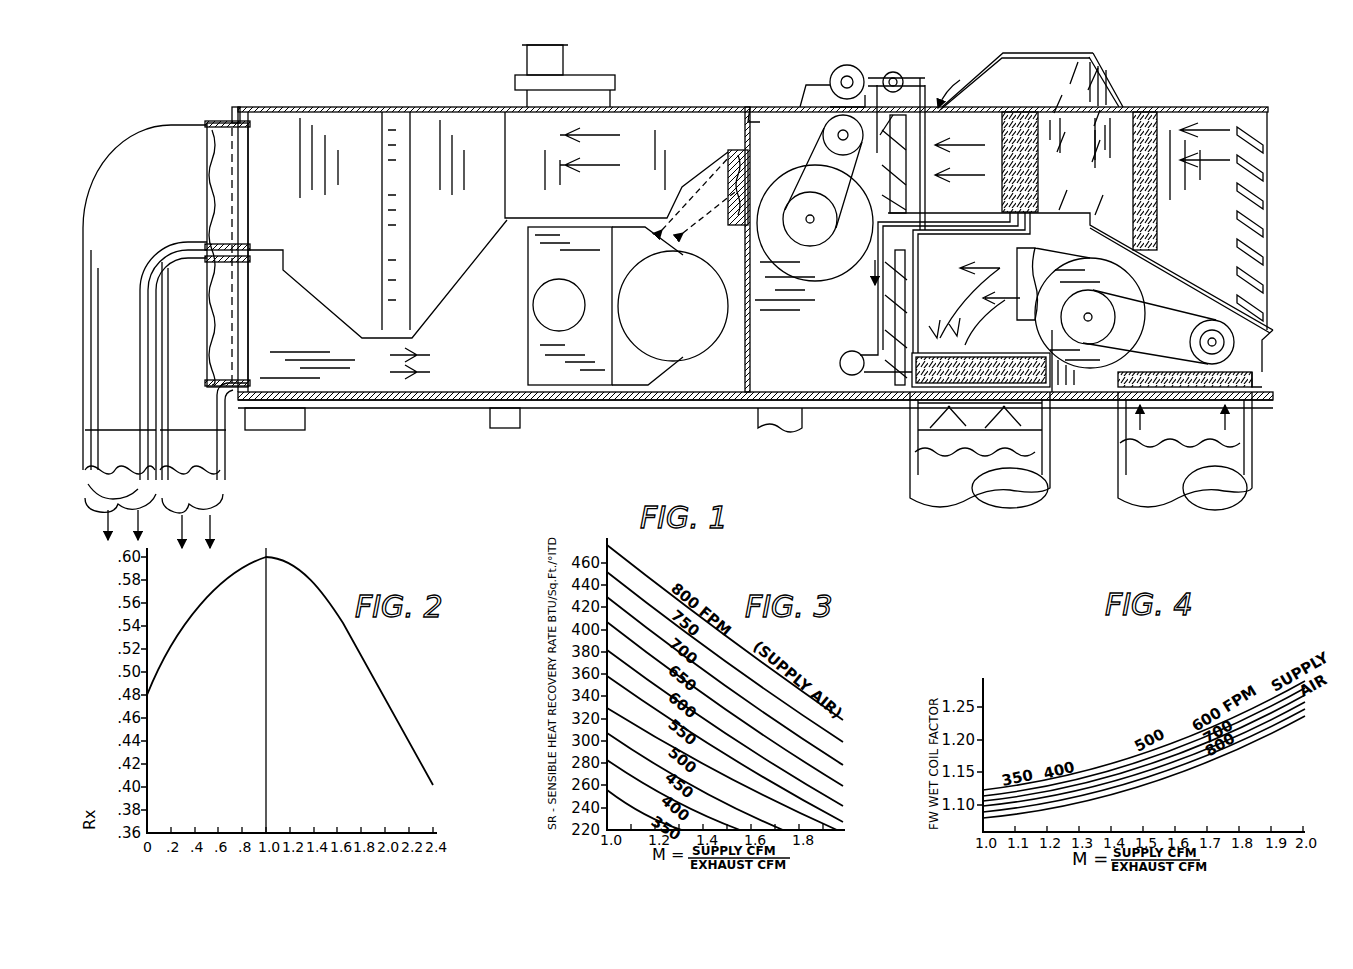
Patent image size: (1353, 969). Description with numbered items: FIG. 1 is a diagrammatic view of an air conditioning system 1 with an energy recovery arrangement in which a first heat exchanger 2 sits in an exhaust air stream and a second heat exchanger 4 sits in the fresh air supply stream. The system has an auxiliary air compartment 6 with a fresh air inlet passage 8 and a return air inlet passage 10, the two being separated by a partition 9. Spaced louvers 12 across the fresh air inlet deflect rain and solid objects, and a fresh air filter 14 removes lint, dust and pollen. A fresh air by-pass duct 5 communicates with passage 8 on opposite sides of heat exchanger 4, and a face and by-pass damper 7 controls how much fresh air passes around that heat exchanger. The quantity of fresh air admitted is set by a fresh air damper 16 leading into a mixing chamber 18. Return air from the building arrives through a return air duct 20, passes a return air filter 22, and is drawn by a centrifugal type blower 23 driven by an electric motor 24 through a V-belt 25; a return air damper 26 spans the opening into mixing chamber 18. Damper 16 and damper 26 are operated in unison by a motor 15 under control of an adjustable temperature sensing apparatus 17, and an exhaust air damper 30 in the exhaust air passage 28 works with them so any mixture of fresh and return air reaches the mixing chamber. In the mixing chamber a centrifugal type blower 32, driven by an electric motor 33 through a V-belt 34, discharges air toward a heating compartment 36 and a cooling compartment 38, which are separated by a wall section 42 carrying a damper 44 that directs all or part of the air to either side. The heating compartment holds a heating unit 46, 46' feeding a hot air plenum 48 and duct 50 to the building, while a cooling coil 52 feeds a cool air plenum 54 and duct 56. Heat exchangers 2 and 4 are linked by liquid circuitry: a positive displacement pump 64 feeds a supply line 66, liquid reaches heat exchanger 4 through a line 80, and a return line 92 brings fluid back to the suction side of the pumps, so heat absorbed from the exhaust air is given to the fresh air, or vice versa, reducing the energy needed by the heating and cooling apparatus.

The air conditioning system 1 is at (728, 74).
The first heat exchanger 2 is at (1013, 352).
The second heat exchanger 4 is at (1002, 130).
The fresh air by-pass duct 5 is at (1031, 52).
The auxiliary air compartment 6 is at (1125, 92).
The face and by-pass damper 7 is at (1065, 77).
The fresh air inlet passage 8 is at (1215, 115).
The partition 9 is at (1255, 312).
The return air inlet passage 10 is at (1240, 438).
The louvers 12 is at (1250, 140).
The fresh air filter 14 is at (1148, 112).
The motor 15 is at (846, 66).
The fresh air damper 16 is at (908, 138).
The adjustable temperature sensing apparatus 17 is at (745, 118).
The mixing chamber 18 is at (752, 114).
The return air duct 20 is at (1113, 481).
The return air filter 22 is at (1250, 378).
The centrifugal type blower 23 is at (1142, 302).
The electric motor 24 is at (1232, 338).
The V-belt 25 is at (1168, 315).
The return air damper 26 is at (893, 305).
The exhaust air passage 28 is at (1038, 446).
The exhaust air damper 30 is at (928, 432).
The centrifugal type blower 32 is at (795, 140).
The electric motor 33 is at (825, 128).
The V-belt 34 is at (802, 172).
The heating compartment 36 is at (735, 400).
The cooling compartment 38 is at (483, 110).
The wall section 42 is at (582, 218).
The damper 44 is at (728, 192).
The heating unit 46 is at (612, 309).
The vent cap 46' is at (575, 72).
The hot air plenum 48 is at (250, 343).
The duct 50 is at (225, 490).
The cooling coil 52 is at (404, 258).
The cool air plenum 54 is at (163, 134).
The duct 56 is at (100, 504).
The positive displacement pump 64 is at (838, 369).
The supply line 66 is at (860, 375).
The line 80 is at (950, 230).
The return line 92 is at (878, 343).